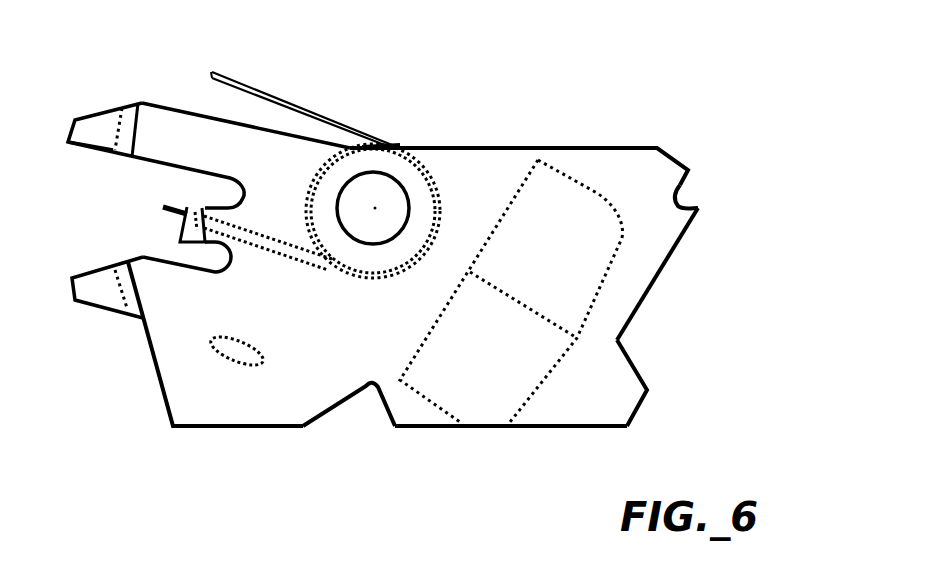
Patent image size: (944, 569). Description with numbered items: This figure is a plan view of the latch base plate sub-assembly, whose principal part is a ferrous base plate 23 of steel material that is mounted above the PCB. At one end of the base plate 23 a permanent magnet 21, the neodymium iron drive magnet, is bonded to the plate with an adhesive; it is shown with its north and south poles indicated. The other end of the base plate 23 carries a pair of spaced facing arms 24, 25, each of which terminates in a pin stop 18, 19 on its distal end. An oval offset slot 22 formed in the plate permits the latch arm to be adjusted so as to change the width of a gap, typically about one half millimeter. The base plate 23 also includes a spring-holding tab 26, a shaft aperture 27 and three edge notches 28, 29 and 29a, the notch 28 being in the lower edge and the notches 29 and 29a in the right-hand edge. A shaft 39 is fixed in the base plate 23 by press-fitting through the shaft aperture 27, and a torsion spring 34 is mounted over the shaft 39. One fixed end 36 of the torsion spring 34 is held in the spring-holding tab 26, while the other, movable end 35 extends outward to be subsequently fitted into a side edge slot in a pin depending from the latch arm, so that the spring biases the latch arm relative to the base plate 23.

The pin stop 18 is at (88, 152).
The pin stop 19 is at (100, 267).
The permanent magnet 21 is at (570, 287).
The offset slot 22 is at (237, 367).
The base plate 23 is at (565, 407).
The arm 24 is at (167, 103).
The arm 25 is at (137, 323).
The spring-holding tab 26 is at (197, 207).
The shaft aperture 27 is at (364, 176).
The edge notch 28 is at (372, 392).
The edge notch 29 is at (687, 197).
The edge notch 29a is at (633, 347).
The torsion spring 34 is at (440, 172).
The movable end 35 is at (237, 82).
The fixed end 36 is at (165, 214).
The shaft 39 is at (375, 207).